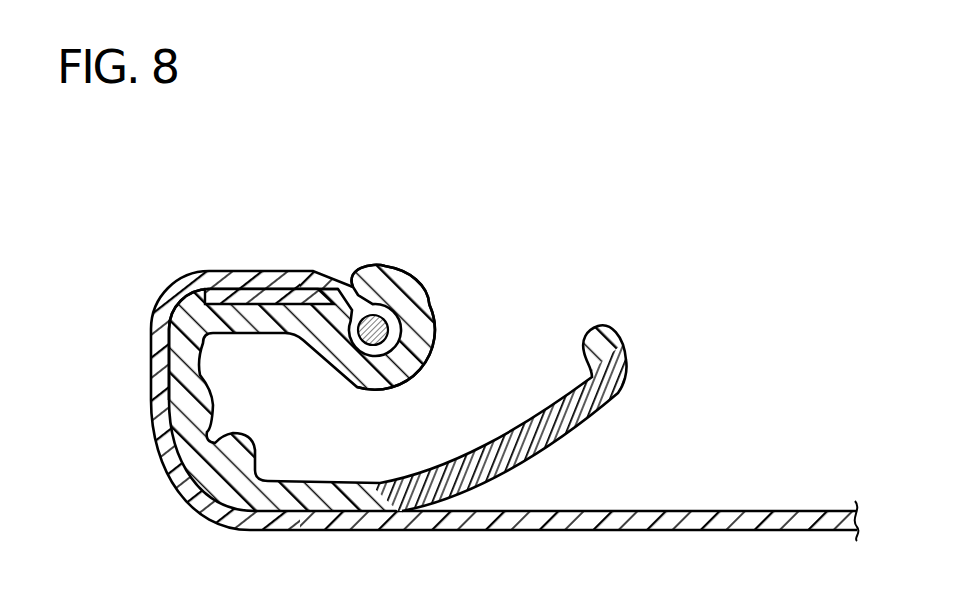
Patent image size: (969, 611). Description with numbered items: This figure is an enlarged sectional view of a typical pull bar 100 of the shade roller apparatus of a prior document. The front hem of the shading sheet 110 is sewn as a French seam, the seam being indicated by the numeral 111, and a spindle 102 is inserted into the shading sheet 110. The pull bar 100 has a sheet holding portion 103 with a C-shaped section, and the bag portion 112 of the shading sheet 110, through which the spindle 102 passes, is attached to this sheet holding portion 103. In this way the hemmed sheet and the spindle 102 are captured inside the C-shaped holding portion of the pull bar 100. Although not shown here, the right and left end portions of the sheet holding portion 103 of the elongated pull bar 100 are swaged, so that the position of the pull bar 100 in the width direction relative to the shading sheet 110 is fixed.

The pull bar 100 is at (633, 333).
The spindle 102 is at (383, 328).
The sheet holding portion 103 is at (386, 282).
The shading sheet 110 is at (724, 534).
The seam 111 is at (259, 302).
The bag portion 112 is at (376, 352).